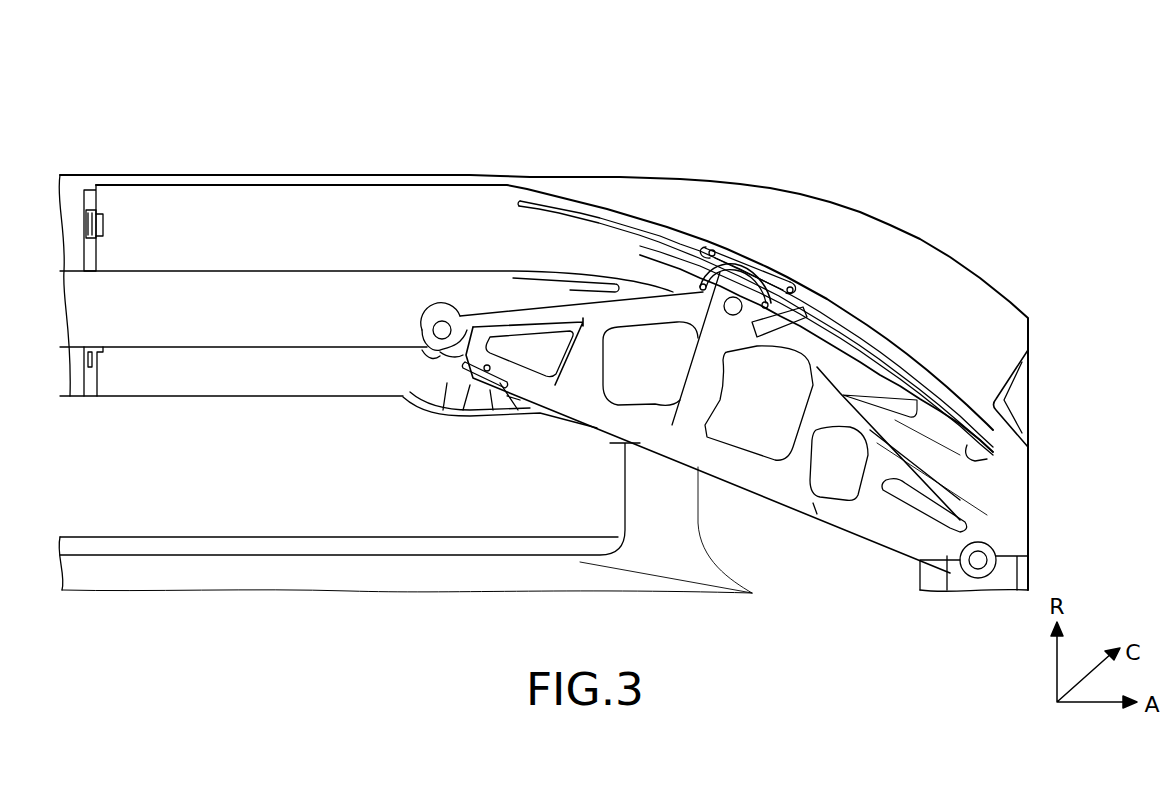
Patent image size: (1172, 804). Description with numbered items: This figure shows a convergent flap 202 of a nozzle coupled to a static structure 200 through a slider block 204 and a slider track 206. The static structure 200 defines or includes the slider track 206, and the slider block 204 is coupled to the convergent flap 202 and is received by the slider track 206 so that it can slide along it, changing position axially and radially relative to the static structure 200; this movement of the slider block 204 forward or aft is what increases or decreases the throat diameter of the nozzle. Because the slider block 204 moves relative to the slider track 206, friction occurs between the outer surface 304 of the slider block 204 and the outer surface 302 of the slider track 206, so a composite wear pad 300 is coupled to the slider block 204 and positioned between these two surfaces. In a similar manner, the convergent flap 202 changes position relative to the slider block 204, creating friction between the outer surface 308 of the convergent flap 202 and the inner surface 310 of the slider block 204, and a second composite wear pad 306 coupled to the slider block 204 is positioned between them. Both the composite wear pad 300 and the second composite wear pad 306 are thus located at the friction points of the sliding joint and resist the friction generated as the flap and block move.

The static structure 200 is at (362, 175).
The convergent flap 202 is at (783, 500).
The slider block 204 is at (810, 293).
The slider track 206 is at (646, 222).
The composite wear pad 300 is at (737, 265).
The outer surface of slider track 302 is at (694, 230).
The outer surface of slider block 304 is at (767, 274).
The second composite wear pad 306 is at (756, 312).
The outer surface of convergent flap 308 is at (697, 347).
The inner surface of slider block 310 is at (760, 275).